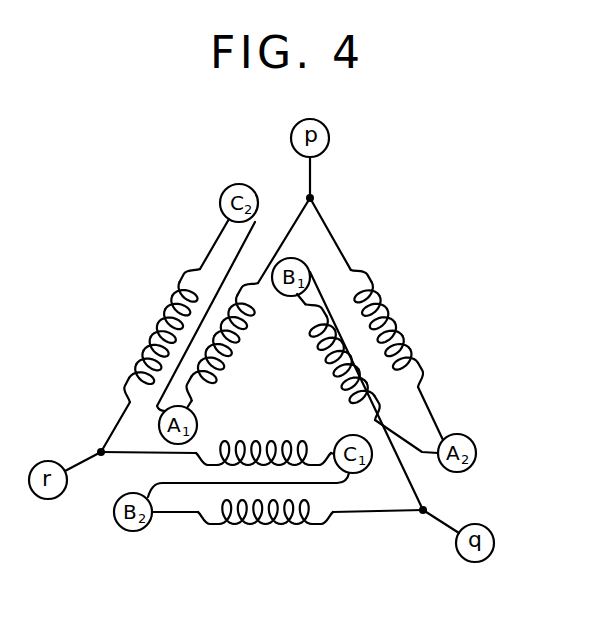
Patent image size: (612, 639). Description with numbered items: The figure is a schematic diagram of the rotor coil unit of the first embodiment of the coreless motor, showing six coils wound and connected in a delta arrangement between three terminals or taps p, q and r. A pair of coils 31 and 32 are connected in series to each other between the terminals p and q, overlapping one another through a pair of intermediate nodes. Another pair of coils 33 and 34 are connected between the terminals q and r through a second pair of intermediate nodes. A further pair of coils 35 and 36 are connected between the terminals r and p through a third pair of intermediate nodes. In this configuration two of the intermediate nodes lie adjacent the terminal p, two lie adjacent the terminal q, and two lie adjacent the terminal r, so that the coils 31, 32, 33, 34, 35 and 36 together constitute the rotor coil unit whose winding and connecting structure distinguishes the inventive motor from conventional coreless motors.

The coil 31 is at (392, 324).
The coil 32 is at (378, 407).
The coil 33 is at (285, 530).
The coil 34 is at (202, 458).
The coil 35 is at (165, 304).
The coil 36 is at (236, 276).